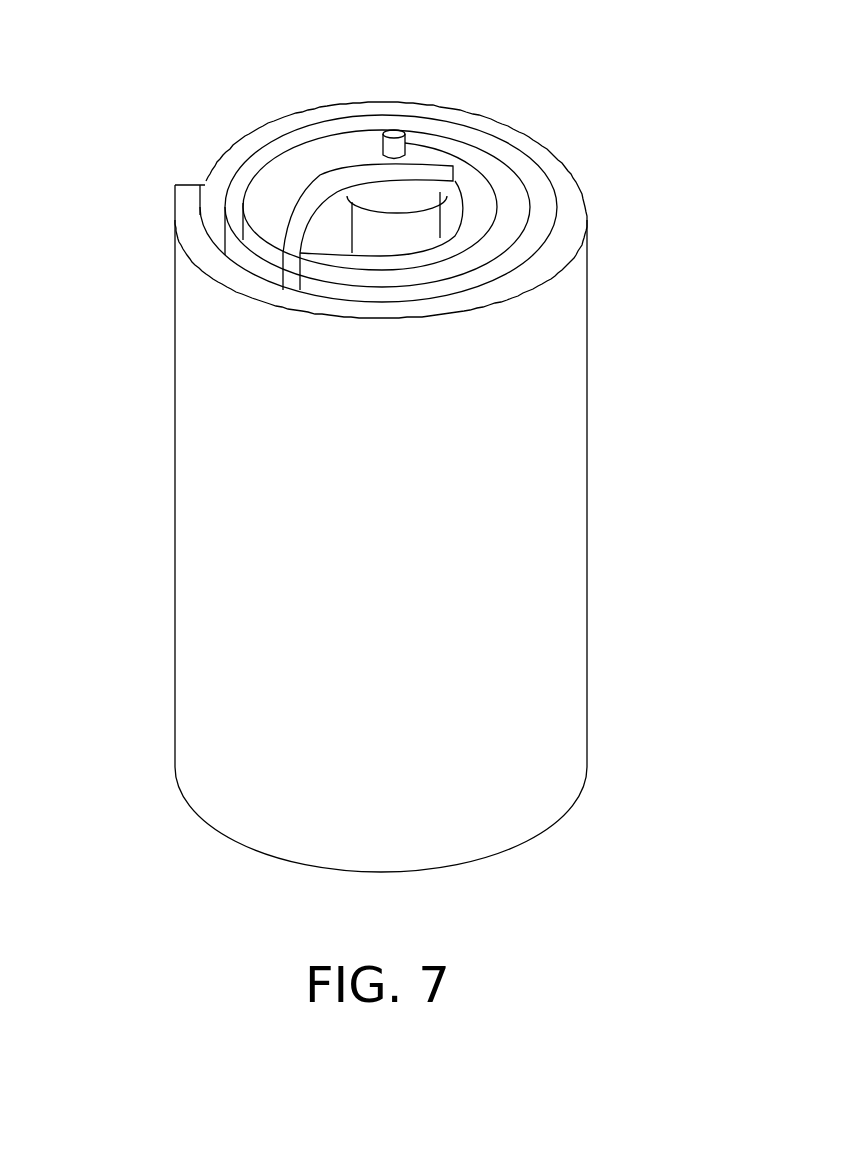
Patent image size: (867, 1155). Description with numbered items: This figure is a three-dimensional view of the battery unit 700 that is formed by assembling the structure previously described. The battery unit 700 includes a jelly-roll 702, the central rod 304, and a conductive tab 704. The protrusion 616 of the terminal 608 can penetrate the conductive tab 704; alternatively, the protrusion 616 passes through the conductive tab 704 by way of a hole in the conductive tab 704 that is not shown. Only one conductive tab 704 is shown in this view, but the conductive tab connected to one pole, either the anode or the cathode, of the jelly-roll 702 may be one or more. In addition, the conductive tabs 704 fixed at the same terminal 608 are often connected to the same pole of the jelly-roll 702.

The battery unit 700 is at (196, 63).
The jelly-roll 702 is at (587, 484).
The conductive tab 704 is at (250, 220).
The terminal 608 is at (457, 191).
The central rod 304 is at (440, 228).
The protrusion 616 is at (394, 130).